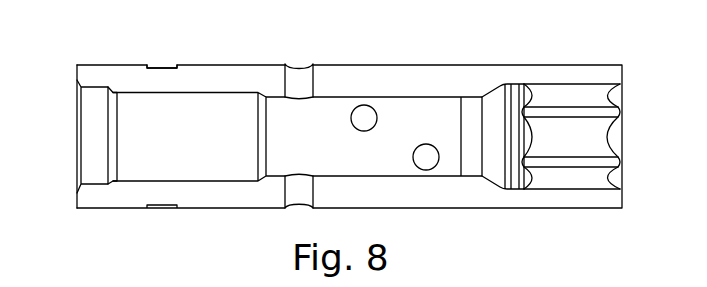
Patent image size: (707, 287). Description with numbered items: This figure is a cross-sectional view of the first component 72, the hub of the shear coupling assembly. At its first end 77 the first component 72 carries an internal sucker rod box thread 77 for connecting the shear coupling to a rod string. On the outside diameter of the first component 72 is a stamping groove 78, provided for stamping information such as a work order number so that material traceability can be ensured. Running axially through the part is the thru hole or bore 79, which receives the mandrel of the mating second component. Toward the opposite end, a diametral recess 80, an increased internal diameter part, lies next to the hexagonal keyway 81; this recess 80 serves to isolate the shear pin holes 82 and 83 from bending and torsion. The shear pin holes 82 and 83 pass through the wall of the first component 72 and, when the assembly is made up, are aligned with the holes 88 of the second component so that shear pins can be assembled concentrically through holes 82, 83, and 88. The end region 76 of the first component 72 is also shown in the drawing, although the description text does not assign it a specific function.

The first component 72 is at (380, 65).
The left end face 76 is at (76, 89).
The first end / internal sucker rod box thread 77 is at (130, 93).
The stamping groove 78 is at (157, 65).
The axial thru hole 79 is at (352, 175).
The diametral recess 80 is at (508, 84).
The hexagonal keyway 81 is at (606, 136).
The shear pin hole 82 is at (302, 64).
The shear pin hole 83 is at (290, 210).
The holes 88 is at (360, 106).